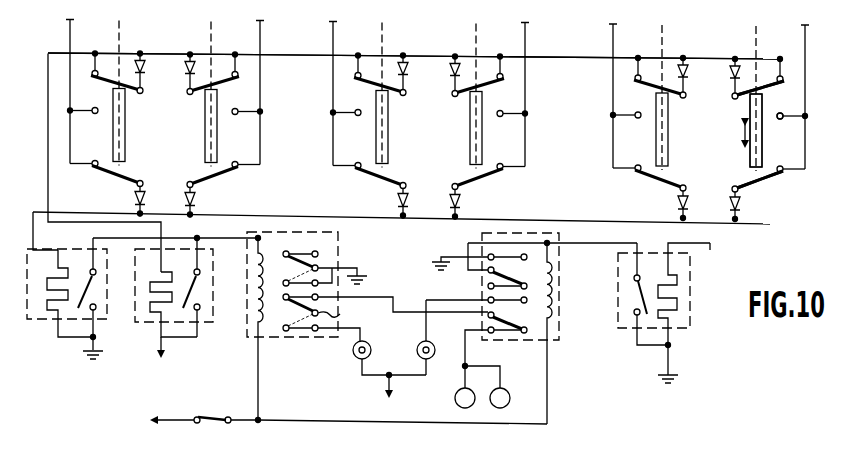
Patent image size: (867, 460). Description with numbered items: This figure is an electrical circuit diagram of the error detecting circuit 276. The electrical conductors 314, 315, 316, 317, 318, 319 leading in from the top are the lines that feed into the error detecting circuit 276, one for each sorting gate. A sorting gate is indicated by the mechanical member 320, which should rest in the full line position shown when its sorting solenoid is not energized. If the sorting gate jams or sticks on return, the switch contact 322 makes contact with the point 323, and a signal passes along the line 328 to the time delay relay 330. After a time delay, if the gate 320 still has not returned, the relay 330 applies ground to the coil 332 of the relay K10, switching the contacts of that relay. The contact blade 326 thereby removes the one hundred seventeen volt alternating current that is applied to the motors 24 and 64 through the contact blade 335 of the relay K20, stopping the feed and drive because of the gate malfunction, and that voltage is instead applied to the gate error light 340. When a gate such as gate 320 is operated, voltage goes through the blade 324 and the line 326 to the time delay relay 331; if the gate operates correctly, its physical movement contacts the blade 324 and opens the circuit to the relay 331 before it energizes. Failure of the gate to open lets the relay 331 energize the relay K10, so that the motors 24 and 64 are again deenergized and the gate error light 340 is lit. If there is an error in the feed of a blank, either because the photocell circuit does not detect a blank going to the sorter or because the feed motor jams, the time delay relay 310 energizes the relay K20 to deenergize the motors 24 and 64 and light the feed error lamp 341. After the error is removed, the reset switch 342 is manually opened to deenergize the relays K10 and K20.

The time delay relay 310 is at (691, 300).
The electrical conductor 314 is at (805, 53).
The electrical conductor 315 is at (613, 52).
The electrical conductor 316 is at (525, 42).
The electrical conductor 317 is at (333, 40).
The electrical conductor 318 is at (260, 46).
The electrical conductor 319 is at (70, 46).
The mechanical member 320 is at (764, 106).
The switch contact 322 is at (775, 85).
The point 323 is at (783, 119).
The blade 324 is at (772, 180).
The contact blade 326 is at (540, 220).
The line 328 is at (557, 58).
The error detecting circuit 276 is at (584, 48).
The time delay relay 330 is at (188, 314).
The time delay relay 331 is at (47, 320).
The coil 332 is at (221, 337).
The contact blade 335 is at (520, 322).
The gate error light 340 is at (371, 355).
The feed error lamp 341 is at (434, 344).
The reset switch 342 is at (232, 405).
The motor 24 is at (460, 388).
The motor 64 is at (508, 403).
The relay K10 is at (338, 248).
The relay K20 is at (534, 328).